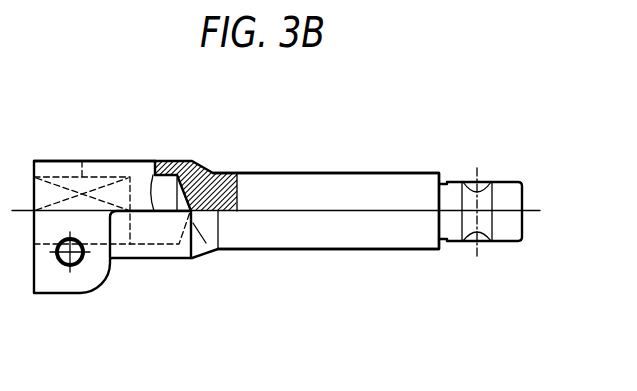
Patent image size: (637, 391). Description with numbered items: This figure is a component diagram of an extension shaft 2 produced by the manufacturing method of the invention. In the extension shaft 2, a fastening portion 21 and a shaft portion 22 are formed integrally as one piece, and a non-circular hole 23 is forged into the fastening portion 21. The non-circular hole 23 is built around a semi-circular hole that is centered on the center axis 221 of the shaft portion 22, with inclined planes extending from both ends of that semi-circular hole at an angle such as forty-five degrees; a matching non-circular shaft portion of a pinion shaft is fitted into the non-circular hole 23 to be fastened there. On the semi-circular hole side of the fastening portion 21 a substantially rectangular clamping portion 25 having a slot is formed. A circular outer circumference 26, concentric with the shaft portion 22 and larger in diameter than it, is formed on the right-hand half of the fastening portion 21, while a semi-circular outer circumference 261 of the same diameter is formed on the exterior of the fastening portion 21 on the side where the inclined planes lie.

The extension shaft 2 is at (204, 151).
The fastening portion 21 is at (127, 160).
The shaft portion 22 is at (363, 166).
The center axis 221 is at (360, 212).
The non-circular hole 23 is at (82, 161).
The clamping portion 25 is at (55, 277).
The circular outer circumference 26 is at (162, 259).
The semi-circular outer circumference 261 is at (48, 161).